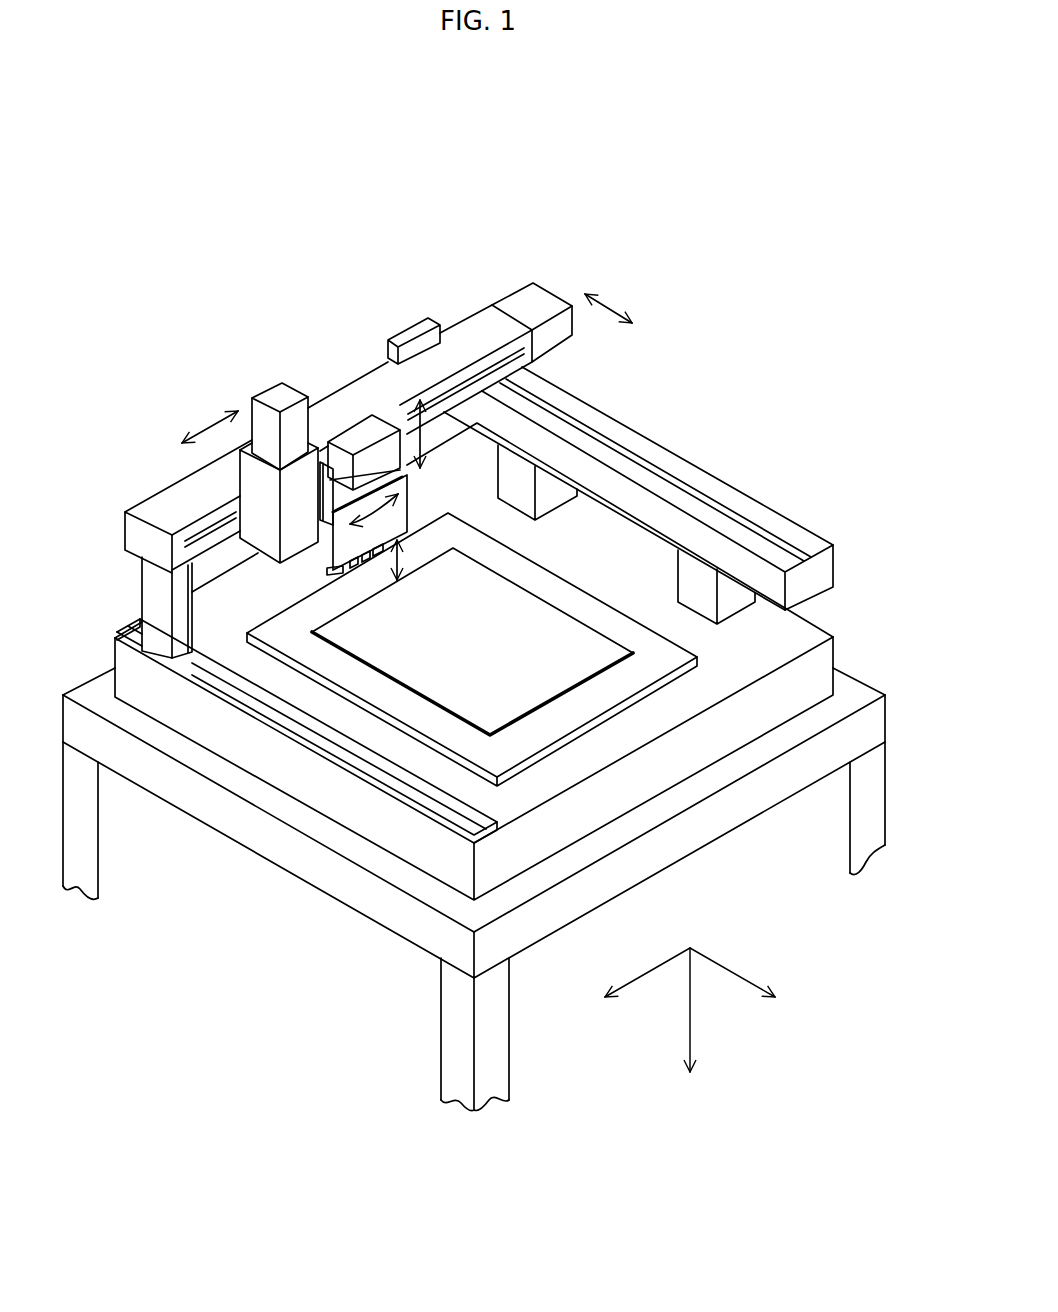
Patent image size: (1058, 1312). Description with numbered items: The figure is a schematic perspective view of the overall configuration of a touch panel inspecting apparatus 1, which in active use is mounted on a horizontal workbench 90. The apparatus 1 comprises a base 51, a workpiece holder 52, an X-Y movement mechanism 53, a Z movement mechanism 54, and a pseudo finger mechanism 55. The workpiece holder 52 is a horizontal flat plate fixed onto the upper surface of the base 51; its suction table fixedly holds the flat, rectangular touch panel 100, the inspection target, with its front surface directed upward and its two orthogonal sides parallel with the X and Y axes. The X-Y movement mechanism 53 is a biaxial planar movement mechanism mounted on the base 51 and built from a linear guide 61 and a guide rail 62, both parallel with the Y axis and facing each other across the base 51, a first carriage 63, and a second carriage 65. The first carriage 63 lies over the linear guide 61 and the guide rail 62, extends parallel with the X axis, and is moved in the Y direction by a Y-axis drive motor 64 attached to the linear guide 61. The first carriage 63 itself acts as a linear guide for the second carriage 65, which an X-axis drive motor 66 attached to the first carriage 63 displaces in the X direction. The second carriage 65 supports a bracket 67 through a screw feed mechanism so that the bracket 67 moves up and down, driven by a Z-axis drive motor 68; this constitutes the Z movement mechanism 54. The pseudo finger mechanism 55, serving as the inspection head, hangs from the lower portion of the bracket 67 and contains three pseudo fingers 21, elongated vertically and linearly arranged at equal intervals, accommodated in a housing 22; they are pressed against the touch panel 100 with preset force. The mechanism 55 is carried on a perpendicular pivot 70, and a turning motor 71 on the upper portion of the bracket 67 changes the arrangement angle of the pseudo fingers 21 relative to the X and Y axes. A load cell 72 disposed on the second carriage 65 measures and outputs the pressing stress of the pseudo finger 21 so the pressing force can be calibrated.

The touch panel inspecting apparatus 1 is at (147, 245).
The pseudo finger 21 is at (364, 556).
The housing 22 is at (384, 548).
The base 51 is at (822, 630).
The workpiece holder 52 is at (607, 693).
The X-Y movement mechanism 53 is at (507, 226).
The Z movement mechanism 54 is at (313, 422).
The pseudo finger mechanism 55 is at (300, 568).
The linear guide 61 is at (738, 508).
The guide rail 62 is at (384, 778).
The first carriage 63 is at (458, 337).
The Y-axis drive motor 64 is at (422, 327).
The second carriage 65 is at (258, 488).
The X-axis drive motor 66 is at (547, 303).
The bracket 67 is at (408, 491).
The Z-axis drive motor 68 is at (267, 397).
The pivot 70 is at (346, 416).
The turning motor 71 is at (372, 414).
The load cell 72 is at (181, 446).
The workbench 90 is at (98, 672).
The touch panel 100 is at (560, 622).